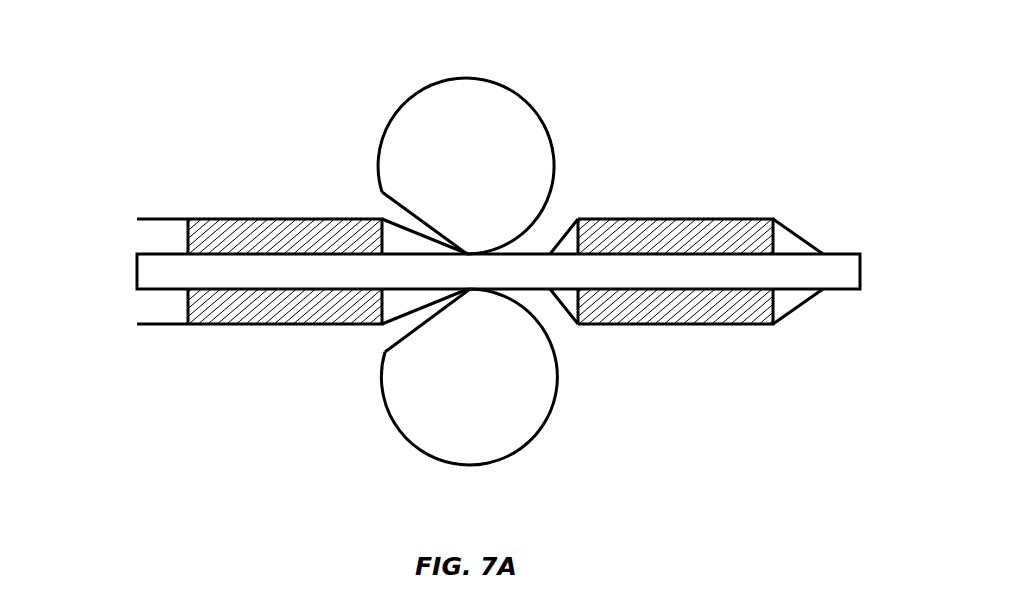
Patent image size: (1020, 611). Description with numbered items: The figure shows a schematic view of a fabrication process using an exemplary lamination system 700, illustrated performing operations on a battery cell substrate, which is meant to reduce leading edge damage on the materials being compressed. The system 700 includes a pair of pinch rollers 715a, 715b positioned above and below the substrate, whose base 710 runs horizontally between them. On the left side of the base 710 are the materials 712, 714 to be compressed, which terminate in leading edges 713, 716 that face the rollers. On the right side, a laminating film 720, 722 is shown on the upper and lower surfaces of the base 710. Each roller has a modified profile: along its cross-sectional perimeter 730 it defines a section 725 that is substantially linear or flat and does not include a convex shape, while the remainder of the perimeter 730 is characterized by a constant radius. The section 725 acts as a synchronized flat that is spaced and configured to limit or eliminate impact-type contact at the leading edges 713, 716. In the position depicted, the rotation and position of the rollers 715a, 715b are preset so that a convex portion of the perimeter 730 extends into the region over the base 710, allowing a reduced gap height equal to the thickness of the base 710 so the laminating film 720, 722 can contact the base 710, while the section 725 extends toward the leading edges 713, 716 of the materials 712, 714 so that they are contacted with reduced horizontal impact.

The lamination system 700 is at (128, 110).
The base 710 is at (848, 253).
The material 712 is at (187, 238).
The leading edge 713 is at (378, 238).
The material 714 is at (187, 300).
The roller 715a is at (512, 145).
The roller 715b is at (555, 410).
The leading edge 716 is at (378, 305).
The laminating film 720 is at (792, 232).
The laminating film 722 is at (805, 302).
The section 725 is at (415, 210).
The cross-sectional perimeter 730 is at (513, 88).